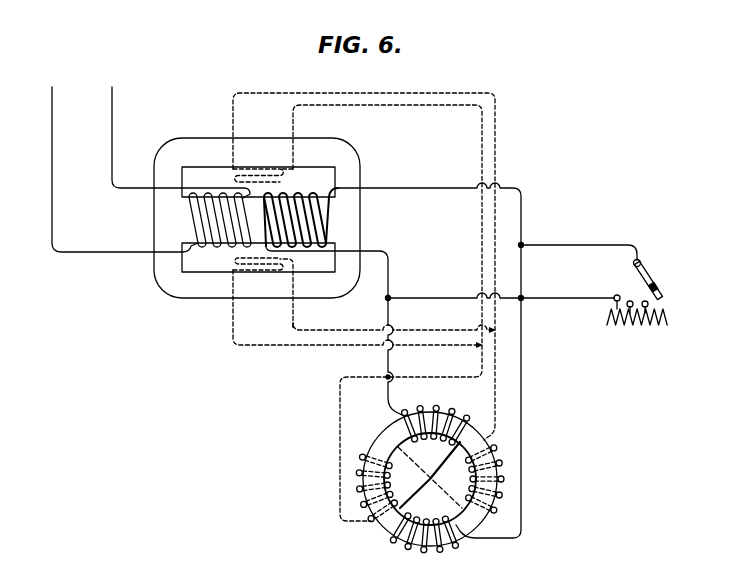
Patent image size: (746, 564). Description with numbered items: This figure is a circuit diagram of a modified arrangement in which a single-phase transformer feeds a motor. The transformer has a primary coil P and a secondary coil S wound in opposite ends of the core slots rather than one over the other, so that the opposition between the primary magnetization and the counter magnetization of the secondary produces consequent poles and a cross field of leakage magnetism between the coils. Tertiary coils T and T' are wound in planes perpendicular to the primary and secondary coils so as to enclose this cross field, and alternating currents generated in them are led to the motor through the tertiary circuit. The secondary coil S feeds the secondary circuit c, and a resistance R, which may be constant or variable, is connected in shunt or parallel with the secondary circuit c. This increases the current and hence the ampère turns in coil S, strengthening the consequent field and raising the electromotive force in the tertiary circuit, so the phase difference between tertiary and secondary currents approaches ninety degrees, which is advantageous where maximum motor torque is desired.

The primary coil P is at (210, 220).
The secondary coil S is at (304, 217).
The tertiary coil T is at (248, 290).
The tertiary coil T' is at (248, 178).
The secondary circuit c is at (451, 360).
The resistance R is at (637, 307).